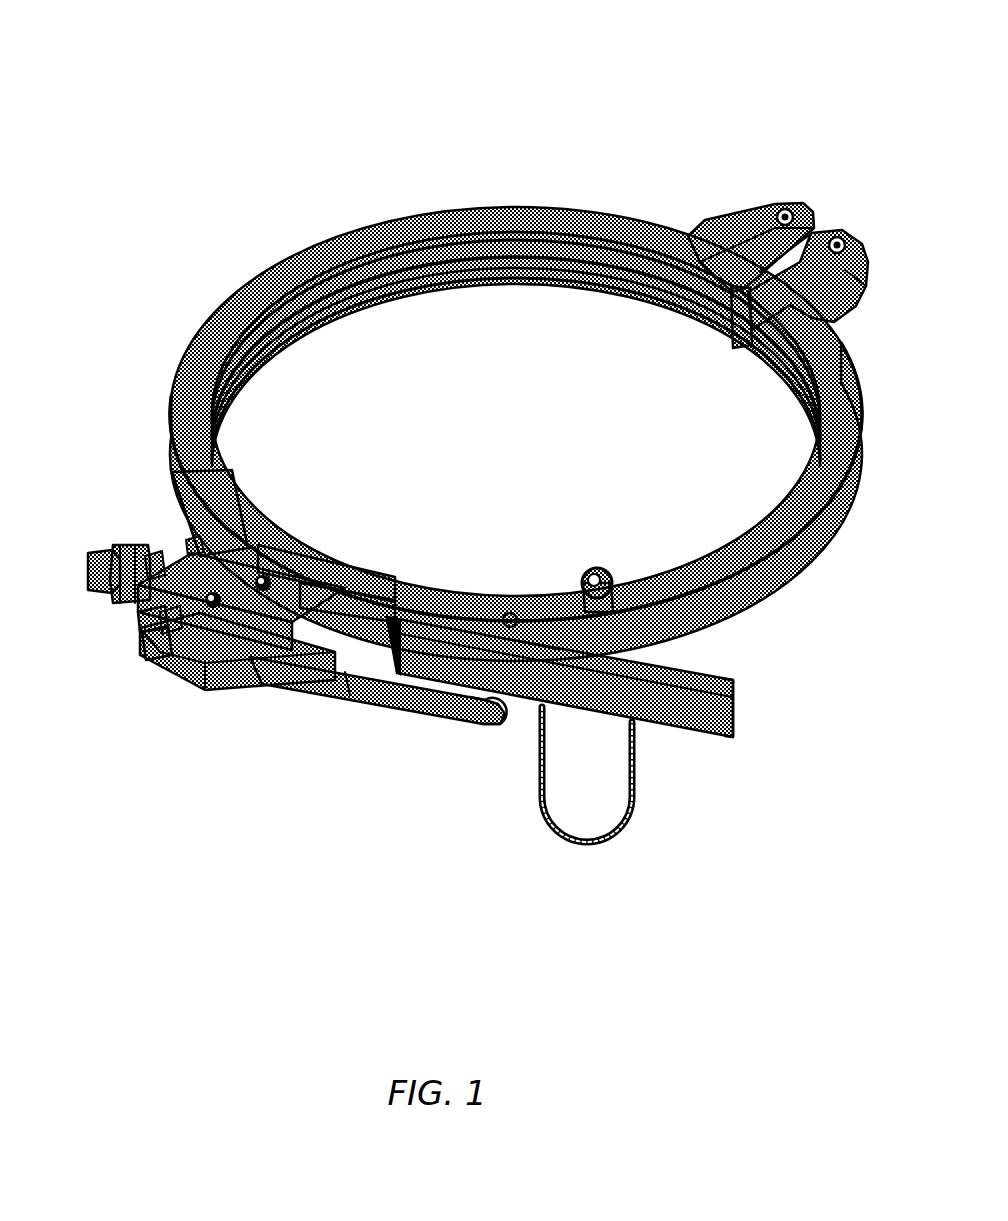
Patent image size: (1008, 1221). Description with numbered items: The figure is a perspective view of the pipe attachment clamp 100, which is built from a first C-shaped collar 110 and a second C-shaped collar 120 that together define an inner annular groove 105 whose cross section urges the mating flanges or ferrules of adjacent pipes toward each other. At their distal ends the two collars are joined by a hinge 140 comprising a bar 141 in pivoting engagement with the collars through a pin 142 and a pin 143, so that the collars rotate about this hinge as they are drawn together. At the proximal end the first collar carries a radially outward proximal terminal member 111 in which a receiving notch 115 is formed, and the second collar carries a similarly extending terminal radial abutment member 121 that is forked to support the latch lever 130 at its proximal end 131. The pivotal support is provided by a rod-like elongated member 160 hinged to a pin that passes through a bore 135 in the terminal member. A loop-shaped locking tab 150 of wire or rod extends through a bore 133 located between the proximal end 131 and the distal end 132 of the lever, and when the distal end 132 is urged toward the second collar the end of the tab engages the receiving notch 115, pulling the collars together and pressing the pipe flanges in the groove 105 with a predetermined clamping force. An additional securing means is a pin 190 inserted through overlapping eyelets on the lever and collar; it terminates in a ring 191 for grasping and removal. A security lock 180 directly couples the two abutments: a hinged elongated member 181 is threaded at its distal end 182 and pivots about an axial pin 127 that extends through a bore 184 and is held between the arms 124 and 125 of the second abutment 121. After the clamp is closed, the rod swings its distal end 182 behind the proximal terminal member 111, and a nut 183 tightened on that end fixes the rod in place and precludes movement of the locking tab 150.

The pipe attachment clamp 100 is at (170, 180).
The inner annular groove 105 is at (418, 242).
The first C-shaped collar 110 is at (360, 213).
The proximal terminal member 111 is at (152, 657).
The receiving notch 115 is at (198, 528).
The second C-shaped collar 120 is at (762, 606).
The terminal radial abutment member 121 is at (238, 687).
The arm 124 is at (322, 652).
The arm 125 is at (178, 700).
The axial pin 127 is at (168, 562).
The latch lever 130 is at (755, 785).
The proximal end of lever 131 is at (385, 702).
The distal end of lever 132 is at (790, 742).
The bore 133 is at (492, 692).
The bore 135 is at (232, 470).
The hinge 140 is at (780, 112).
The bar 141 is at (822, 215).
The pin 142 is at (745, 200).
The pin 143 is at (738, 325).
The locking tab 150 is at (355, 717).
The elongated member 160 is at (345, 578).
The security lock 180 is at (160, 712).
The elongated member 181 is at (122, 647).
The distal end of rod 182 is at (102, 587).
The nut 183 is at (190, 546).
The bore 184 is at (172, 702).
The pin 190 is at (598, 832).
The ring 191 is at (637, 570).